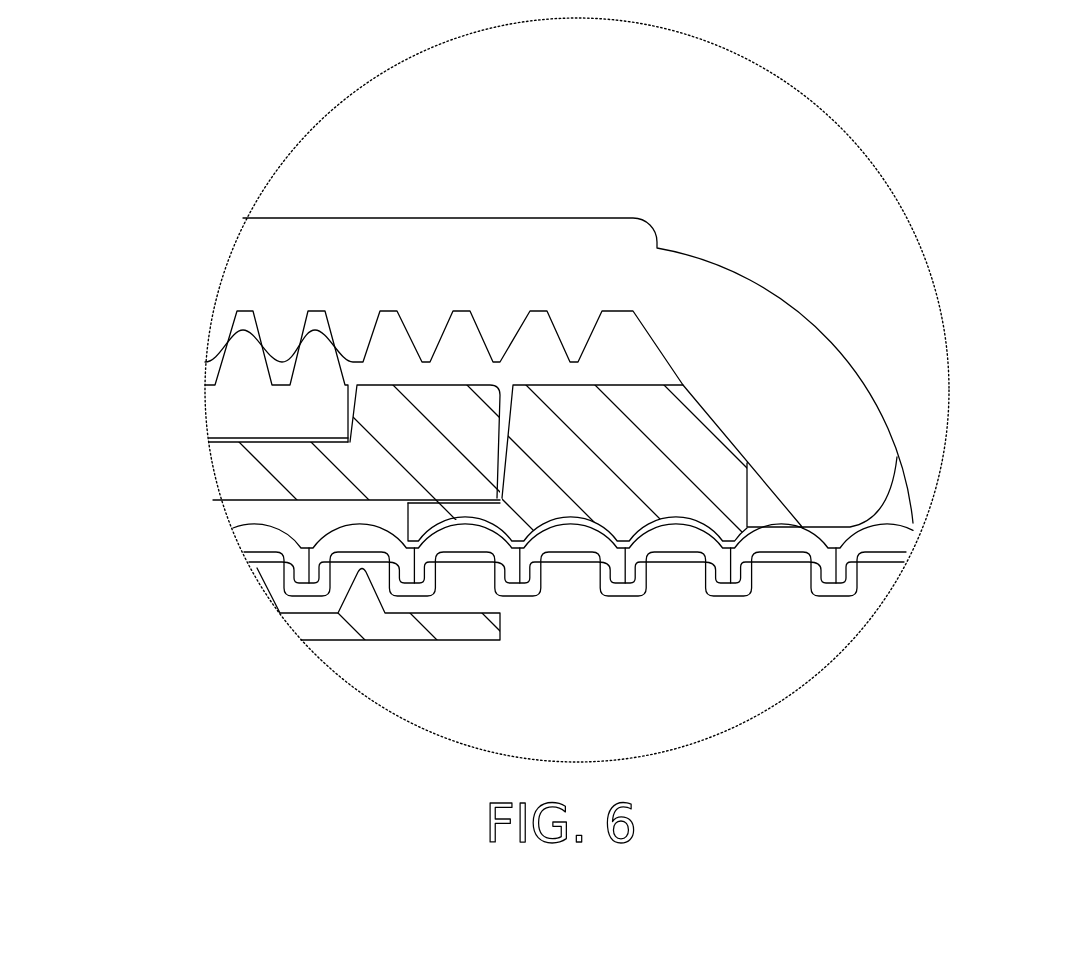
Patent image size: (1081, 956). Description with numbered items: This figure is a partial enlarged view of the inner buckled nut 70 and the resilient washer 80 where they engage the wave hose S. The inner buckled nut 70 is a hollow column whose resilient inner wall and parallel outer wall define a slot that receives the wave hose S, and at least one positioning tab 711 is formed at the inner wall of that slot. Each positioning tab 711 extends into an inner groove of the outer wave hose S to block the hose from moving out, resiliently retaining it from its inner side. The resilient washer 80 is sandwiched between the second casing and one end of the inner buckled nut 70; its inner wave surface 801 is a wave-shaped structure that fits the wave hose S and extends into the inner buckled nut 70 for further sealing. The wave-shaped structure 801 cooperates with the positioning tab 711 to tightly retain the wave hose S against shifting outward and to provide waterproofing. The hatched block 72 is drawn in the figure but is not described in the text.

The inner buckled nut 70 is at (465, 380).
The engaging block 72 is at (392, 418).
The resilient washer 80 is at (661, 477).
The inner wave surface 801 is at (687, 457).
The wave hose S is at (770, 538).
The positioning tab 711 is at (367, 592).